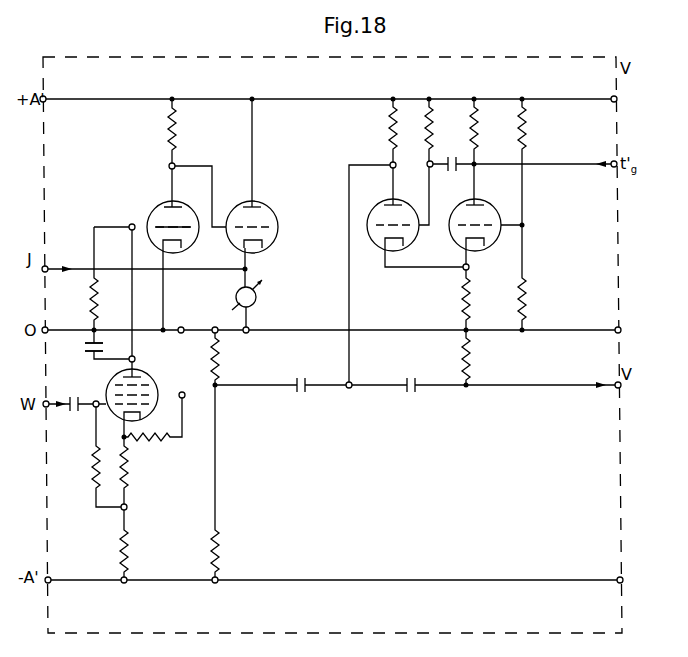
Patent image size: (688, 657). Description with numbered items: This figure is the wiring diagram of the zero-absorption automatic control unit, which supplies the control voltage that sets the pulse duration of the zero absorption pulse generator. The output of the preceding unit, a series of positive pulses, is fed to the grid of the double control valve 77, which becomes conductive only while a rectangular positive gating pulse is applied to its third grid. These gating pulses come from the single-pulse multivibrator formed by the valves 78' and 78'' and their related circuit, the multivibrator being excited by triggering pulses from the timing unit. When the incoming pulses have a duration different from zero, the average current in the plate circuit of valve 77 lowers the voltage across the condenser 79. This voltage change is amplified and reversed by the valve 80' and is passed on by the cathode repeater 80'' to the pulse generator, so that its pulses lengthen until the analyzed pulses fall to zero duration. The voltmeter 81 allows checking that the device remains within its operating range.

The double control valve 77 is at (146, 375).
The valve of single-pulse multivibrator 78' is at (388, 215).
The valve of single-pulse multivibrator 78'' is at (479, 215).
The condenser 79 is at (88, 352).
The valve 80' is at (164, 217).
The cathode repeater 80'' is at (259, 217).
The voltmeter 81 is at (257, 297).